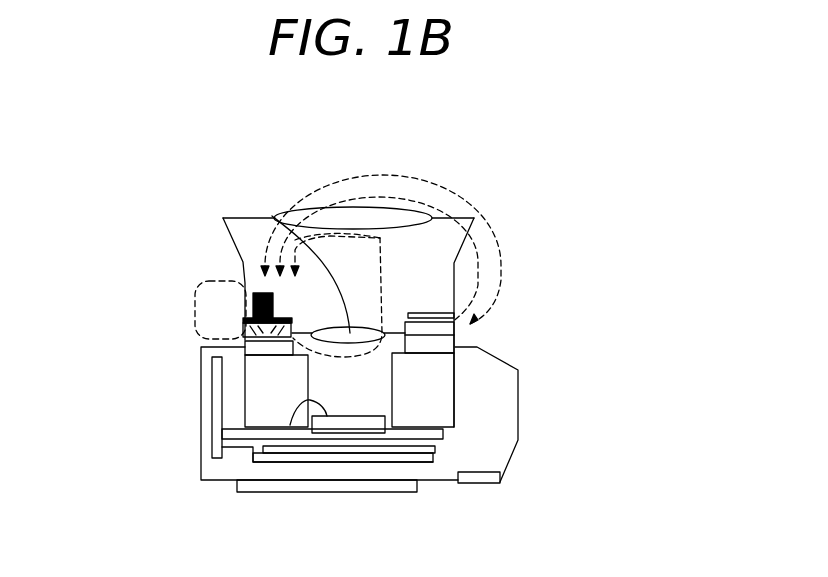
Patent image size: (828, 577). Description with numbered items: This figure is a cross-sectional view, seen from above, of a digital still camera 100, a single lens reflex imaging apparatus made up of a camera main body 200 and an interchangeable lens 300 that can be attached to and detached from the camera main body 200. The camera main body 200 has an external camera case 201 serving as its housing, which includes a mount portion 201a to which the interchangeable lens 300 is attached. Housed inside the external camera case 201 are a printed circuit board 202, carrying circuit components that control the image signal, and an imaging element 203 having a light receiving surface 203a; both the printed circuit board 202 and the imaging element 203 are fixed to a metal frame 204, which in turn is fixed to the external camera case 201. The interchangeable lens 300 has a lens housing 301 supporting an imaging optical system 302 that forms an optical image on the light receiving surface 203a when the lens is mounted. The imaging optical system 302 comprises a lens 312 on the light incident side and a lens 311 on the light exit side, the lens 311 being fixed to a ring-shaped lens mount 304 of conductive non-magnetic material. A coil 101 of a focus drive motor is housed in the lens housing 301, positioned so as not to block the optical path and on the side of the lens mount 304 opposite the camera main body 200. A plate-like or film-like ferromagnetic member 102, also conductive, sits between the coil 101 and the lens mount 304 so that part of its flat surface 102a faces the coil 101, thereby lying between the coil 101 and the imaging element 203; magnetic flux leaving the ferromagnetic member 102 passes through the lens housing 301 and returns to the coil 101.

The digital still camera 100 is at (457, 184).
The interchangeable lens 300 is at (384, 255).
The lens housing 301 is at (228, 237).
The imaging optical system 302 is at (330, 213).
The lens 311 is at (294, 275).
The lens 312 is at (347, 213).
The coil 101 is at (248, 292).
The ferromagnetic member 102 is at (243, 320).
The flat surface 102a is at (315, 298).
The lens mount 304 is at (262, 330).
The camera main body 200 is at (380, 430).
The external camera case 201 is at (518, 386).
The mount portion 201a is at (427, 340).
The printed circuit board 202 is at (387, 463).
The imaging element 203 is at (347, 426).
The light receiving surface 203a is at (290, 425).
The metal frame 204 is at (217, 432).